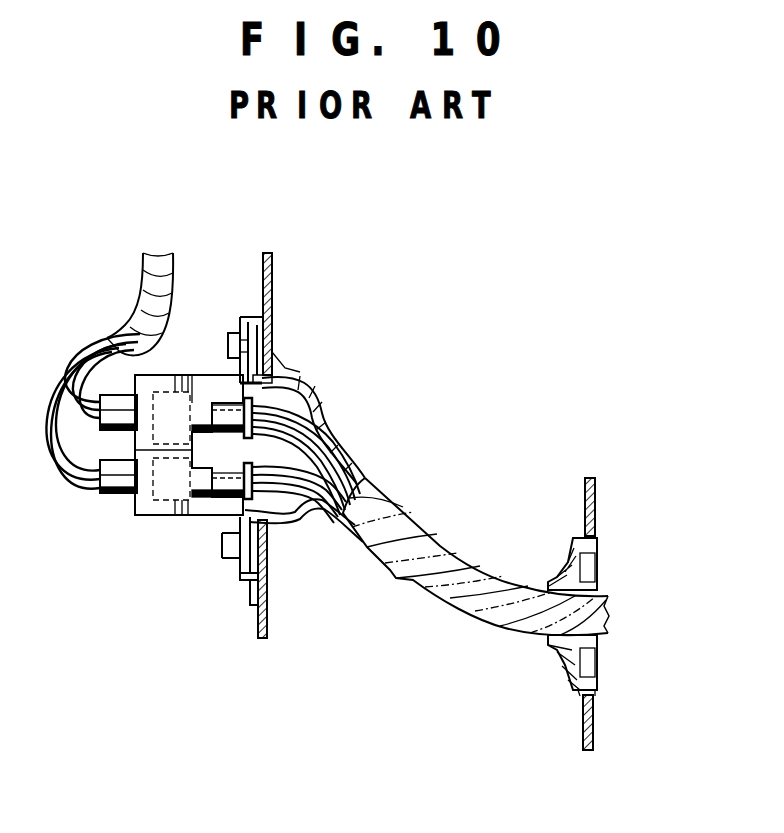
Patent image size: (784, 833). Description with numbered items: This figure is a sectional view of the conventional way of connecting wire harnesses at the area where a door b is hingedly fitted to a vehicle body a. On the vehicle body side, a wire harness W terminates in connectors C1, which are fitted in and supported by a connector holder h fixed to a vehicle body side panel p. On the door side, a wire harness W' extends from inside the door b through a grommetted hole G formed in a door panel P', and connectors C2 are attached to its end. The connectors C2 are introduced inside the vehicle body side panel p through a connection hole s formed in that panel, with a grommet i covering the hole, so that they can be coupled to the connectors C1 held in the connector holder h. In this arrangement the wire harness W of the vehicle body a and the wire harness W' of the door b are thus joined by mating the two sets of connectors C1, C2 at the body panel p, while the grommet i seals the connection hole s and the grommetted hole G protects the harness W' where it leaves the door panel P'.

The wire harness W is at (116, 304).
The wire harness W' is at (476, 592).
The vehicle body a is at (208, 257).
The door b is at (643, 430).
The vehicle body side panel p is at (275, 264).
The door panel P' is at (626, 613).
The connectors C1 is at (112, 402).
The connectors C2 is at (207, 627).
The connector holder h is at (172, 517).
The connection hole s is at (273, 377).
The grommet i is at (317, 395).
The grommetted hole G is at (572, 555).